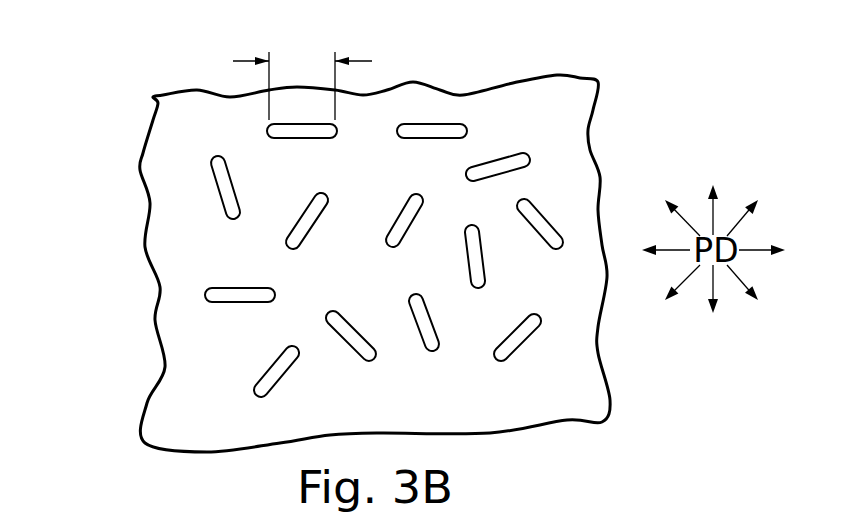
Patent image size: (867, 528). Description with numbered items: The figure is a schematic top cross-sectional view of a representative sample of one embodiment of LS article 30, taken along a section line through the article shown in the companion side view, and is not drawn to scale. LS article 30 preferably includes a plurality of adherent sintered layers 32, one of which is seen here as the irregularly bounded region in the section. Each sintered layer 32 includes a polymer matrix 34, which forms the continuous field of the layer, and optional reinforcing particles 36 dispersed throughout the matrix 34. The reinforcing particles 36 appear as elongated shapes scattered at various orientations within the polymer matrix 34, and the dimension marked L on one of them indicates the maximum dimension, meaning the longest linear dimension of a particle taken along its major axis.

The LS article 30 is at (105, 111).
The adherent sintered layer 32 is at (600, 163).
The polymer matrix 34 is at (515, 128).
The reinforcing particles 36 is at (332, 137).